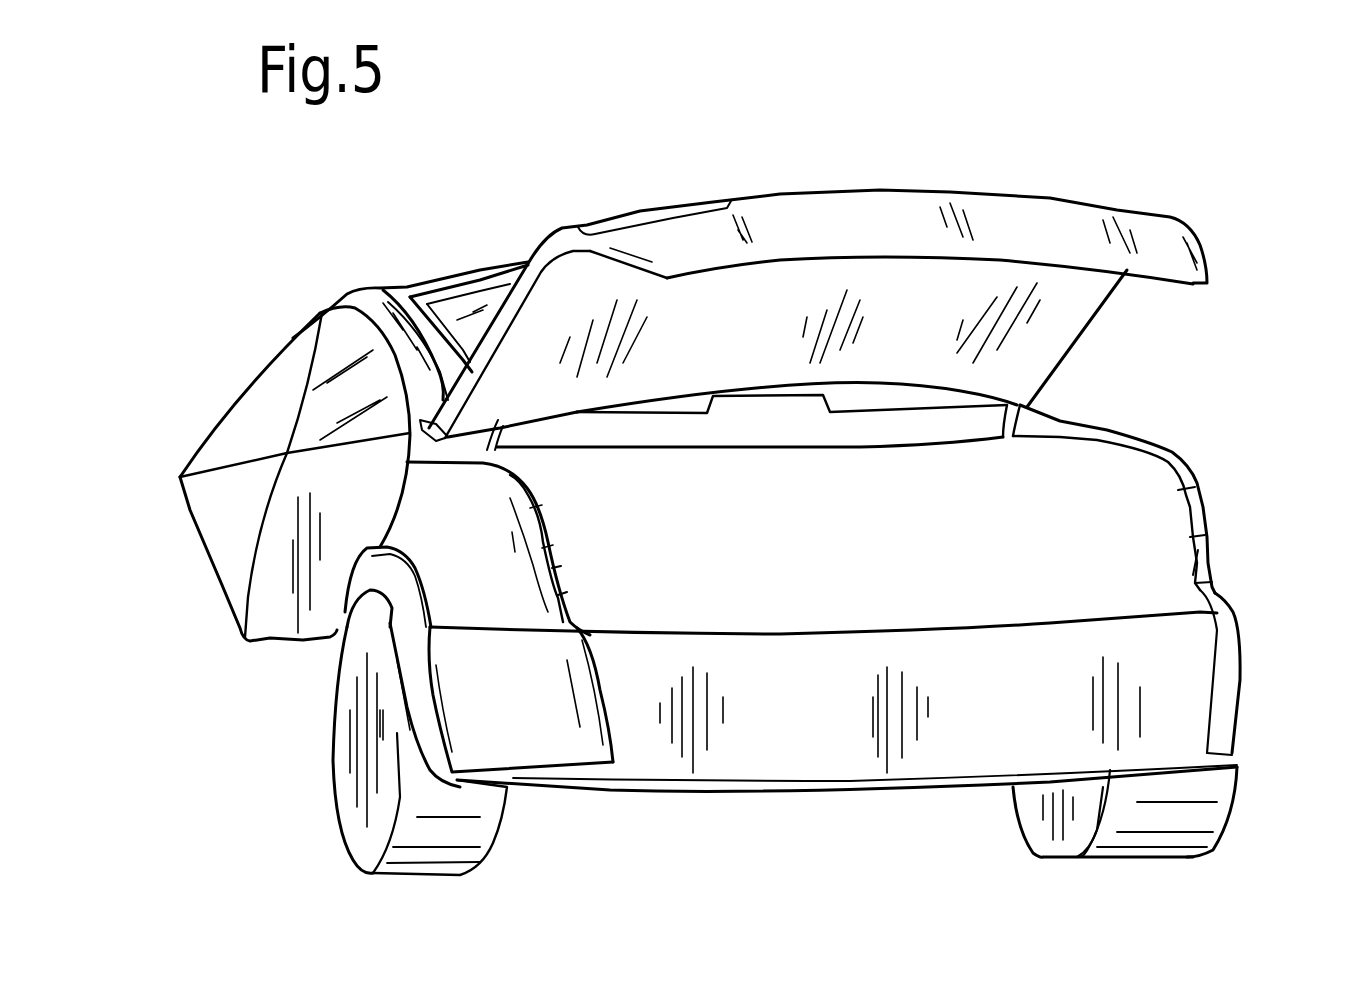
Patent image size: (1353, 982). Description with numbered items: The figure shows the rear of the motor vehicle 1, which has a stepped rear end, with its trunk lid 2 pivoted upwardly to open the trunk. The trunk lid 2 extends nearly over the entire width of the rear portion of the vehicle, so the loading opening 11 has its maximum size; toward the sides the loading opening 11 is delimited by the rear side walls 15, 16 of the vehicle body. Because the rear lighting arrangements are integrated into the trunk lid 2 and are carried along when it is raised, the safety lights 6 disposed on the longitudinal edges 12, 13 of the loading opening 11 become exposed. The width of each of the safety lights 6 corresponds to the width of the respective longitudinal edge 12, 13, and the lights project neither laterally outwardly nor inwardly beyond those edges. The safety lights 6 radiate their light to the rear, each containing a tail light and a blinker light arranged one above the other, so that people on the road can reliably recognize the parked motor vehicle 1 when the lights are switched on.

The motor vehicle 1 is at (417, 256).
The trunk lid 2 is at (848, 215).
The safety lights 6 is at (555, 571).
The loading opening 11 is at (1093, 500).
The longitudinal edge 12 is at (537, 550).
The longitudinal edge 13 is at (1203, 518).
The rear side wall 15 is at (498, 498).
The rear side wall 16 is at (1080, 458).